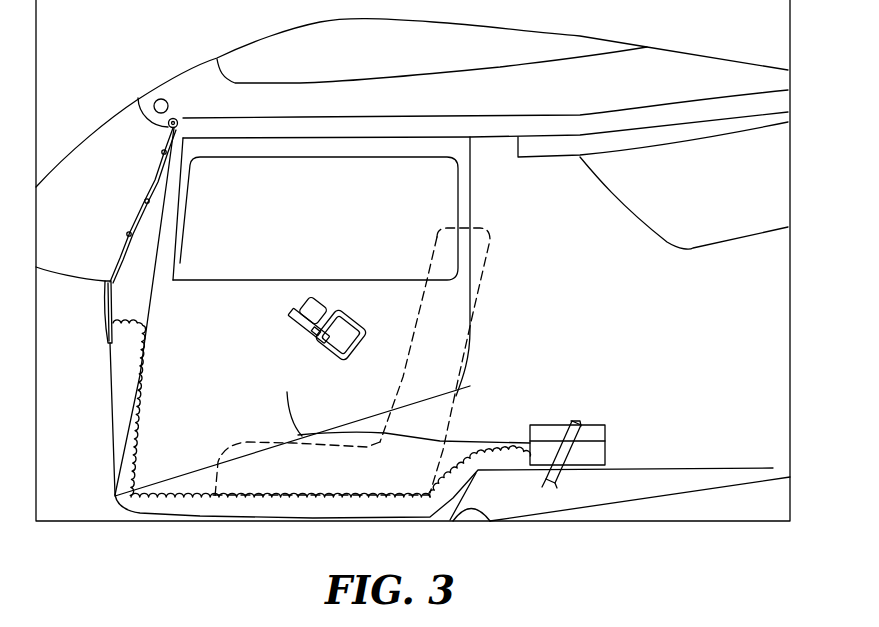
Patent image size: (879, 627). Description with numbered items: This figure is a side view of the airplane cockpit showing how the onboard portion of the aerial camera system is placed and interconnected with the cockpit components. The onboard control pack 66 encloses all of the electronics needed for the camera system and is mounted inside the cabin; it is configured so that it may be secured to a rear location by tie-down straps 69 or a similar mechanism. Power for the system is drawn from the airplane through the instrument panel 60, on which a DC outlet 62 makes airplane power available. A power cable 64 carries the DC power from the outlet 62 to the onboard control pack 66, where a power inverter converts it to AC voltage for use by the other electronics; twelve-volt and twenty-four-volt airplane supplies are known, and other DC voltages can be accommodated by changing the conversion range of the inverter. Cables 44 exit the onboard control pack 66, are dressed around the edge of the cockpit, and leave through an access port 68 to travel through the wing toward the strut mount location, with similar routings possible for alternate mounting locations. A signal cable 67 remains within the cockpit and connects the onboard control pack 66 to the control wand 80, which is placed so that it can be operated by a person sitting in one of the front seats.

The cables 44 is at (177, 120).
The instrument panel 60 is at (113, 293).
The DC outlet 62 is at (115, 323).
The power cable 64 is at (140, 438).
The onboard control pack 66 is at (594, 424).
The signal cable 67 is at (465, 442).
The access port 68 is at (168, 125).
The tie-down straps 69 is at (572, 420).
The control wand 80 is at (292, 365).